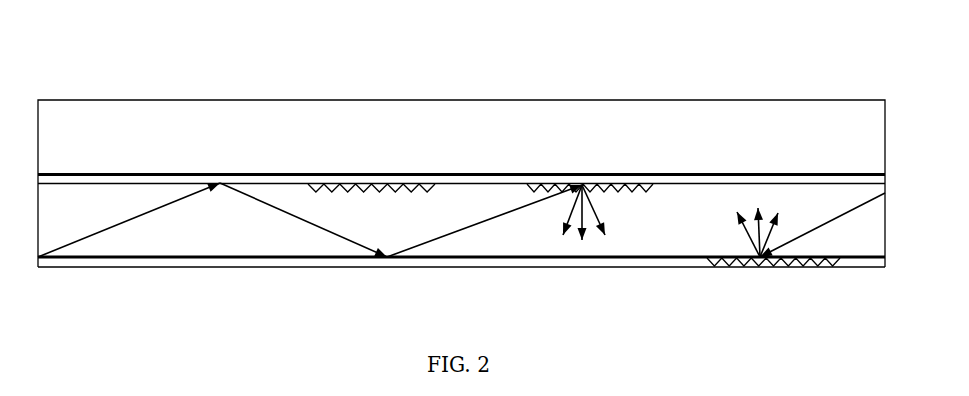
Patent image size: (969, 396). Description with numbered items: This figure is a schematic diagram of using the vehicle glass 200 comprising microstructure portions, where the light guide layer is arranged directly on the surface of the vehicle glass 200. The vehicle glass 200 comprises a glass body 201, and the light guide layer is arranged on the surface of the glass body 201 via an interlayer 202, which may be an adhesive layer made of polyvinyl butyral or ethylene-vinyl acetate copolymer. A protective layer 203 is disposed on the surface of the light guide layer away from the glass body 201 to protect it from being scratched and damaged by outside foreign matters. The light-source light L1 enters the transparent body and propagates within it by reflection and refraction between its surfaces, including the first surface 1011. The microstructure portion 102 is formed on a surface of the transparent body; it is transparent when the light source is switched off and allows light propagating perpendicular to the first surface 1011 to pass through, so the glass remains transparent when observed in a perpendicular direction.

The vehicle glass 200 is at (478, 48).
The glass body 201 is at (225, 133).
The interlayer 202 is at (45, 178).
The protective layer 203 is at (327, 267).
The first surface 1011 is at (240, 258).
The microstructure portion 102 is at (413, 185).
The light-source light L1 is at (92, 236).